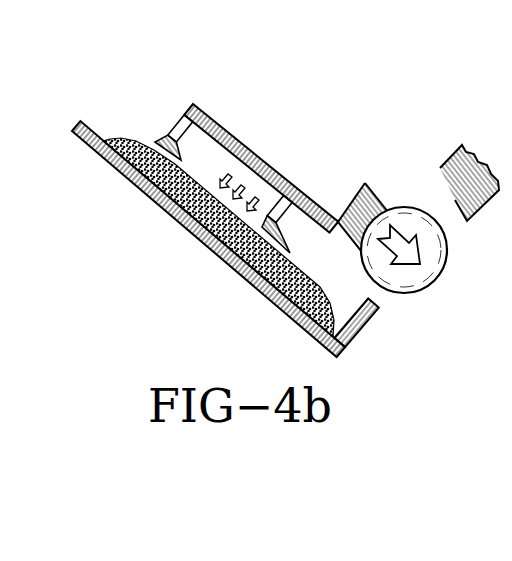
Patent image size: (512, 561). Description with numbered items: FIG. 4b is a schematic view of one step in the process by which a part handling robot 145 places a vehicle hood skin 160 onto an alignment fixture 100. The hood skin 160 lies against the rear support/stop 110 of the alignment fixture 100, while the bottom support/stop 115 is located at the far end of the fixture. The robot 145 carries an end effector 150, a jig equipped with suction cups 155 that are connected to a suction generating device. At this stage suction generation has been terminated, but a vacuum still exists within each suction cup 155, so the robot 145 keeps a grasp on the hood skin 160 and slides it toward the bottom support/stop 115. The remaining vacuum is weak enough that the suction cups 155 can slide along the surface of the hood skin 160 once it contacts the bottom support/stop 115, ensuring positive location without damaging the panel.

The alignment fixture 100 is at (198, 283).
The rear support/stop 110 is at (138, 193).
The bottom support/stop 115 is at (358, 333).
The part handling robot 145 is at (433, 168).
The end effector 150 is at (256, 133).
The suction cups 155 is at (165, 140).
The hood skin 160 is at (107, 138).